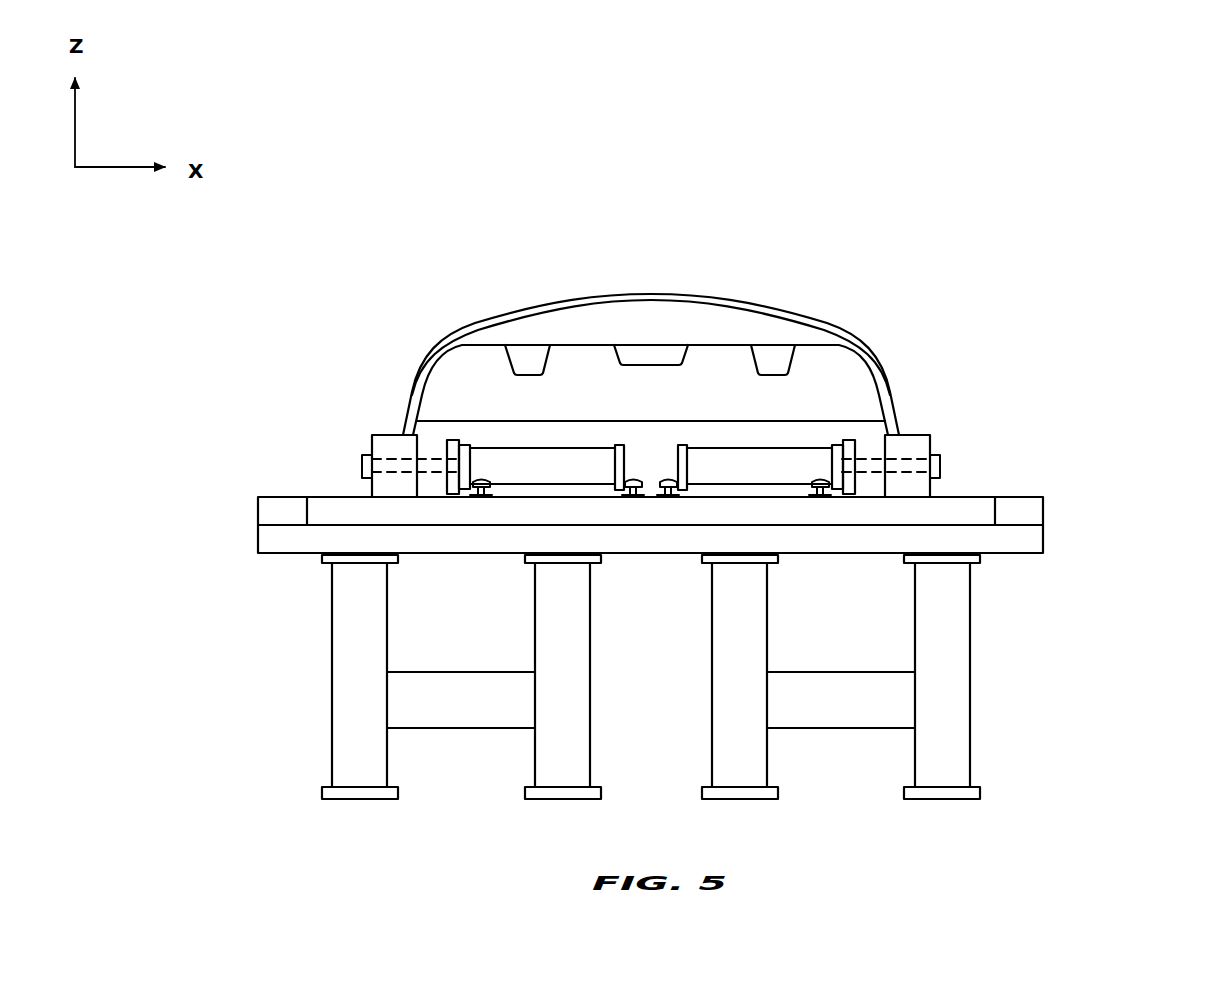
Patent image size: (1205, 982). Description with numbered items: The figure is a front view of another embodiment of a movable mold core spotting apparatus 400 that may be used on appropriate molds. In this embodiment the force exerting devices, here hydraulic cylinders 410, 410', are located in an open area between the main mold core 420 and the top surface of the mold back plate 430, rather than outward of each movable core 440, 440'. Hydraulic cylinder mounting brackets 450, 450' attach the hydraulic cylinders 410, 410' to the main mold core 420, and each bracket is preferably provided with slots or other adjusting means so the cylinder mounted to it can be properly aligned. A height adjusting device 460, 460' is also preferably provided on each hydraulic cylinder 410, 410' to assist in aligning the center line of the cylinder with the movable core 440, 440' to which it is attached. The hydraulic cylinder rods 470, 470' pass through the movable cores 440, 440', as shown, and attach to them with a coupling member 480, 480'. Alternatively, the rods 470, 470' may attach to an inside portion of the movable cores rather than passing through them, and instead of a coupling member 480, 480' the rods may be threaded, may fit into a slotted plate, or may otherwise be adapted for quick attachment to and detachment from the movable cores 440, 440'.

The movable mold core spotting apparatus 400 is at (1078, 206).
The hydraulic cylinder 410 is at (547, 531).
The hydraulic cylinder 410' is at (755, 531).
The main mold core 420 is at (683, 322).
The mold back plate 430 is at (982, 515).
The movable core 440 is at (350, 422).
The movable core 440' is at (956, 422).
The hydraulic cylinder mounting bracket 450 is at (402, 387).
The hydraulic cylinder mounting bracket 450' is at (902, 387).
The height adjusting device 460 is at (586, 505).
The height adjusting device 460' is at (767, 439).
The hydraulic cylinder rod 470 is at (416, 538).
The hydraulic cylinder rod 470' is at (886, 538).
The coupling member 480 is at (311, 452).
The coupling member 480' is at (994, 452).